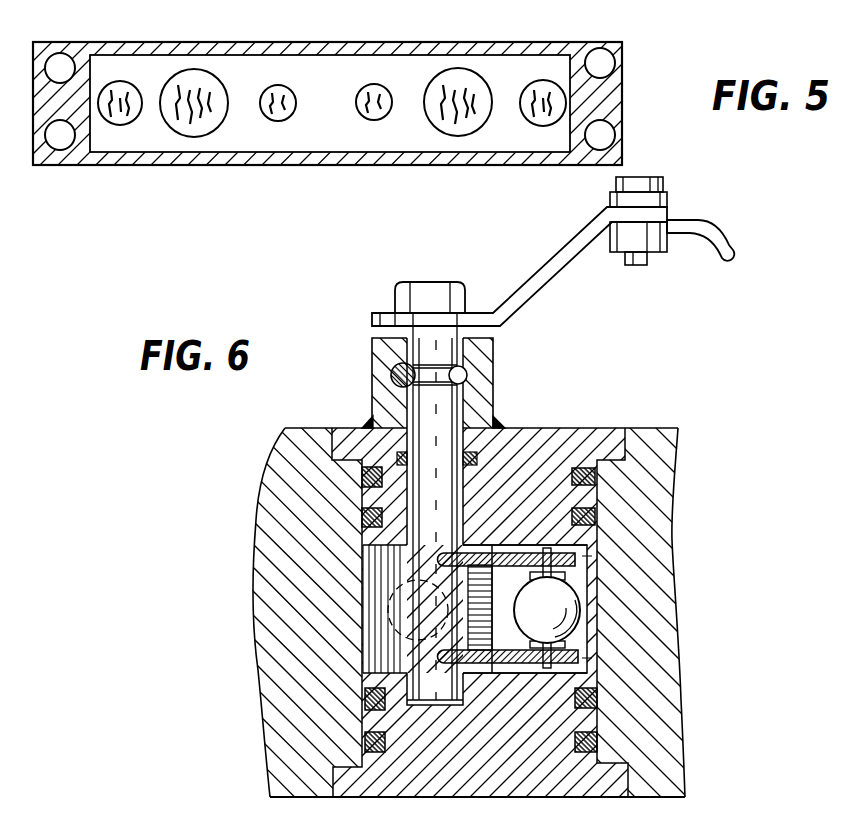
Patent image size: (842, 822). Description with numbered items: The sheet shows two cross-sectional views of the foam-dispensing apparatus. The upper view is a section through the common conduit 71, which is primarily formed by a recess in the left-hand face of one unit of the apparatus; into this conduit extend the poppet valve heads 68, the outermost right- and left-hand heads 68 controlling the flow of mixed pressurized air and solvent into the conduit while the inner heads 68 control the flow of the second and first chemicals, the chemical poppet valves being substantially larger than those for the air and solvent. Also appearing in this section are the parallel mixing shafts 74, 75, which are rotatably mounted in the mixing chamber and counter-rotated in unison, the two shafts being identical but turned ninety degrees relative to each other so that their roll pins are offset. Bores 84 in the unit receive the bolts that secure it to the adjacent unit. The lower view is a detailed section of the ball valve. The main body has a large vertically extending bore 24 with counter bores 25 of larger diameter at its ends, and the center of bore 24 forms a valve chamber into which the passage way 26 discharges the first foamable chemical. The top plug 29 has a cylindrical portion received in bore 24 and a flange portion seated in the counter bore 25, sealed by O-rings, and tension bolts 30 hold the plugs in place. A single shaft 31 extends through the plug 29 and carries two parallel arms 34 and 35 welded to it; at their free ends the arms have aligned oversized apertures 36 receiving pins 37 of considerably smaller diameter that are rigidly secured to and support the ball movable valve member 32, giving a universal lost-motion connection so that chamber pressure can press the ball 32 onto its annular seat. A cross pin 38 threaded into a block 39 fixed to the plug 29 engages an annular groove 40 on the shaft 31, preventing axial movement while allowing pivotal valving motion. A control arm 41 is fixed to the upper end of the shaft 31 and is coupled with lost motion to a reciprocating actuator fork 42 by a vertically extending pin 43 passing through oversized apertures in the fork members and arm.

In FIG. 6, the bore 24 is at (597, 613).
In FIG. 6, the counter bores 25 is at (627, 438).
In FIG. 6, the passage way 26 is at (393, 613).
In FIG. 6, the top plug 29 is at (552, 430).
In FIG. 6, the tension bolts 30 is at (483, 545).
In FIG. 6, the shaft 31 is at (430, 332).
In FIG. 6, the ball movable valve member 32 is at (561, 611).
In FIG. 6, the parallel arm 34 is at (582, 560).
In FIG. 6, the parallel arm 35 is at (597, 665).
In FIG. 6, the oversized apertures 36 is at (528, 550).
In FIG. 6, the pins 37 is at (578, 543).
In FIG. 6, the cross pin 38 is at (392, 370).
In FIG. 6, the block 39 is at (377, 397).
In FIG. 6, the annular groove 40 is at (467, 373).
In FIG. 6, the control arm 41 is at (563, 250).
In FIG. 6, the reciprocating actuator fork 42 is at (668, 200).
In FIG. 6, the vertically extending pin 43 is at (642, 182).
In FIG. 5, the valve head 68 is at (123, 88).
In FIG. 5, the common conduit 71 is at (238, 65).
In FIG. 5, the shaft 74 is at (372, 95).
In FIG. 5, the shaft 75 is at (280, 92).
In FIG. 5, the bores 84 is at (64, 62).